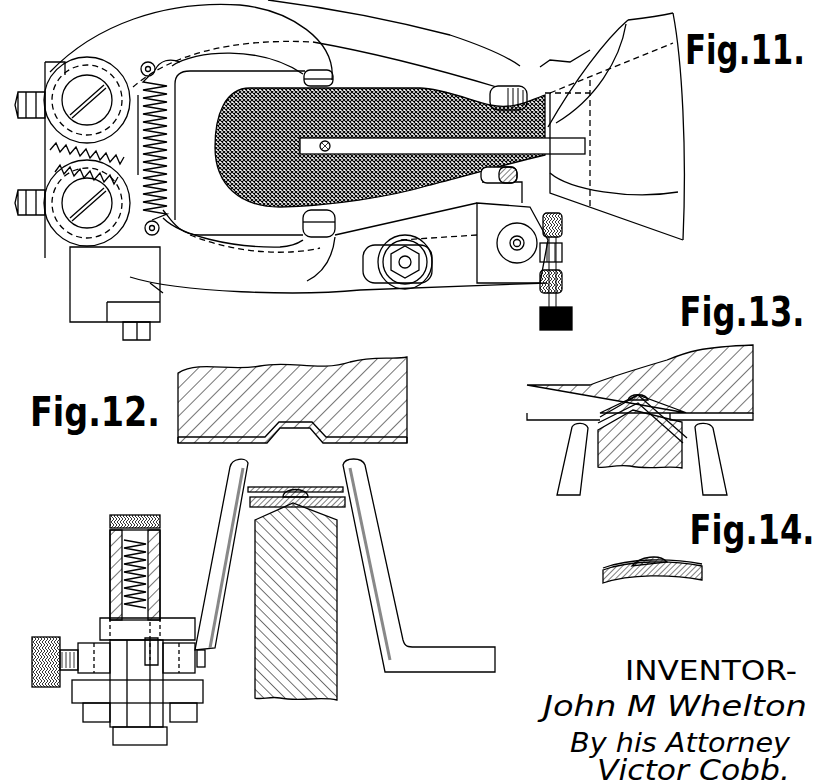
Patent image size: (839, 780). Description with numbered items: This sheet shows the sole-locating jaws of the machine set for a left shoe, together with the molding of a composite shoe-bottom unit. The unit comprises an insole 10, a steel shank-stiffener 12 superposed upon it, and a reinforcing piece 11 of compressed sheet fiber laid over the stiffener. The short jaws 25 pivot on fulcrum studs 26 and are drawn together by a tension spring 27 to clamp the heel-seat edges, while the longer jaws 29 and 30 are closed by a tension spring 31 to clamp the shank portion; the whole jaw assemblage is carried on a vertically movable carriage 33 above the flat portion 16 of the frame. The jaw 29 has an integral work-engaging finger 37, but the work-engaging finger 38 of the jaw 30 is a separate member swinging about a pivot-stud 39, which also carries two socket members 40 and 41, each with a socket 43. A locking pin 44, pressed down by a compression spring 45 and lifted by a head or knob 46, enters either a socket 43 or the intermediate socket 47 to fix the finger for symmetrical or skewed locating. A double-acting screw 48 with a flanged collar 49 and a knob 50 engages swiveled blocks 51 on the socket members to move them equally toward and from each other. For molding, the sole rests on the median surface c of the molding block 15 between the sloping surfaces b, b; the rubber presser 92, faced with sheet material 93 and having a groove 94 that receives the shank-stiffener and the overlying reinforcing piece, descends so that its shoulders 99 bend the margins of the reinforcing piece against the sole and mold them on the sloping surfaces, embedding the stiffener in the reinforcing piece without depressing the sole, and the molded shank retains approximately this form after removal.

In FIG. 11, the insole 10 is at (240, 107).
In FIG. 12, the insole 10 is at (330, 507).
In FIG. 14, the insole 10 is at (618, 579).
In FIG. 12, the reinforcing piece 11 is at (340, 487).
In FIG. 14, the reinforcing piece 11 is at (610, 567).
In FIG. 11, the shank-stiffener 12 is at (423, 143).
In FIG. 12, the shank-stiffener 12 is at (287, 488).
In FIG. 13, the shank-stiffener 12 is at (637, 397).
In FIG. 14, the shank-stiffener 12 is at (650, 556).
In FIG. 11, the molding block 15 is at (238, 198).
In FIG. 12, the molding block 15 is at (340, 627).
In FIG. 13, the molding block 15 is at (647, 464).
In FIG. 11, the flat portion 16 is at (672, 223).
In FIG. 11, the jaws 25 is at (298, 148).
In FIG. 11, the fulcrum studs 26 is at (72, 92).
In FIG. 11, the tension spring 27 is at (141, 214).
In FIG. 11, the jaw 29 is at (394, 44).
In FIG. 11, the jaw 30 is at (431, 232).
In FIG. 11, the tension spring 31 is at (167, 143).
In FIG. 11, the carriage 33 is at (95, 162).
In FIG. 11, the work-engaging finger 37 is at (498, 94).
In FIG. 12, the work-engaging finger 37 is at (383, 577).
In FIG. 13, the work-engaging finger 37 is at (720, 455).
In FIG. 11, the work-engaging finger 38 is at (481, 178).
In FIG. 12, the work-engaging finger 38 is at (225, 478).
In FIG. 13, the work-engaging finger 38 is at (563, 463).
In FIG. 11, the pivot-stud 39 is at (398, 268).
In FIG. 12, the pivot-stud 39 is at (140, 745).
In FIG. 11, the socket member 40 is at (443, 286).
In FIG. 12, the socket member 40 is at (72, 698).
In FIG. 11, the socket member 41 is at (403, 238).
In FIG. 11, the socket 43 is at (515, 268).
In FIG. 12, the locking pin 44 is at (136, 635).
In FIG. 12, the compression spring 45 is at (110, 567).
In FIG. 11, the head or knob 46 is at (545, 222).
In FIG. 12, the head or knob 46 is at (110, 520).
In FIG. 11, the socket 47 is at (497, 244).
In FIG. 12, the socket 47 is at (140, 692).
In FIG. 12, the double-acting screw 48 is at (205, 660).
In FIG. 11, the flanged collar 49 is at (562, 257).
In FIG. 12, the flanged collar 49 is at (152, 645).
In FIG. 11, the knob 50 is at (572, 315).
In FIG. 12, the knob 50 is at (44, 687).
In FIG. 11, the swiveled blocks 51 is at (562, 236).
In FIG. 12, the swiveled blocks 51 is at (82, 645).
In FIG. 12, the presser 92 is at (407, 377).
In FIG. 13, the presser 92 is at (753, 377).
In FIG. 12, the sheet material 93 is at (407, 440).
In FIG. 12, the groove or cavity 94 is at (290, 436).
In FIG. 12, the shoulders 99 is at (323, 443).
In FIG. 12, the sloping surfaces b is at (260, 517).
In FIG. 12, the median surface c is at (295, 508).